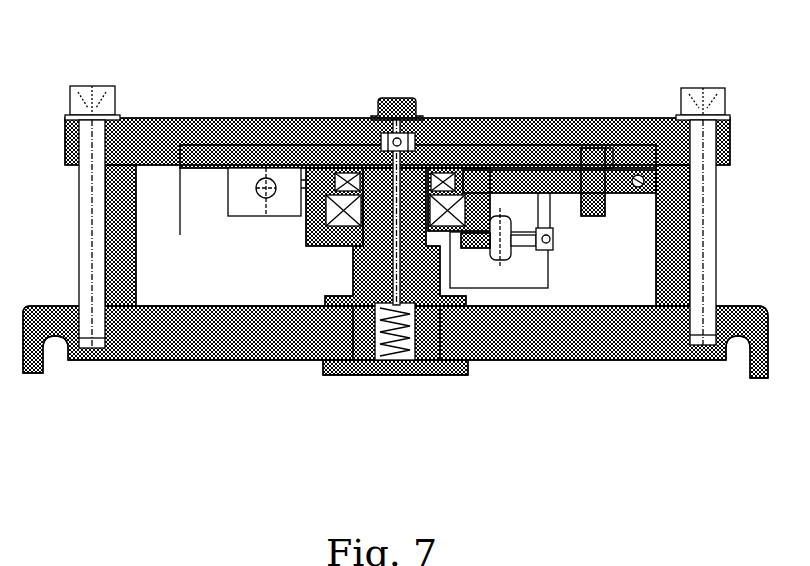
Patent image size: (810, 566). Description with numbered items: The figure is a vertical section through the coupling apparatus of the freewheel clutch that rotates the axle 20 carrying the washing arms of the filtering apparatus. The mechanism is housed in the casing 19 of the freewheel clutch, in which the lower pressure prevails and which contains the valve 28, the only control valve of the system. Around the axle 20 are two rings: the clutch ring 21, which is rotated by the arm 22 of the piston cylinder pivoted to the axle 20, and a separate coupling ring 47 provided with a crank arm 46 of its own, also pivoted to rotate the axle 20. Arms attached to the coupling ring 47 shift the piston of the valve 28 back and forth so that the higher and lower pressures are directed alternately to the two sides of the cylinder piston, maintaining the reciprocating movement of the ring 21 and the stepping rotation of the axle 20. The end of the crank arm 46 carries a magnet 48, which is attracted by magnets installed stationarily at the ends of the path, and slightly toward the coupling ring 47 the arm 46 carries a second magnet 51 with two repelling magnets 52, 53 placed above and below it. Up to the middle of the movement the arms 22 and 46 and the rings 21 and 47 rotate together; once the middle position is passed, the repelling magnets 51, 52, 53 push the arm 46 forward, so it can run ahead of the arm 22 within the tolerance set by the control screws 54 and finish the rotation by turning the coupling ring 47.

The casing 19 is at (641, 278).
The axle 20 is at (353, 227).
The coupling ring 21 is at (295, 222).
The arm 22 is at (515, 243).
The valve 28 is at (238, 193).
The crank arm 46 is at (496, 109).
The coupling ring 47 is at (442, 109).
The magnet 48 is at (645, 109).
The second magnet 51 is at (612, 187).
The repelling magnet 52 is at (593, 109).
The repelling magnet 53 is at (585, 209).
The control screw 54 is at (543, 247).